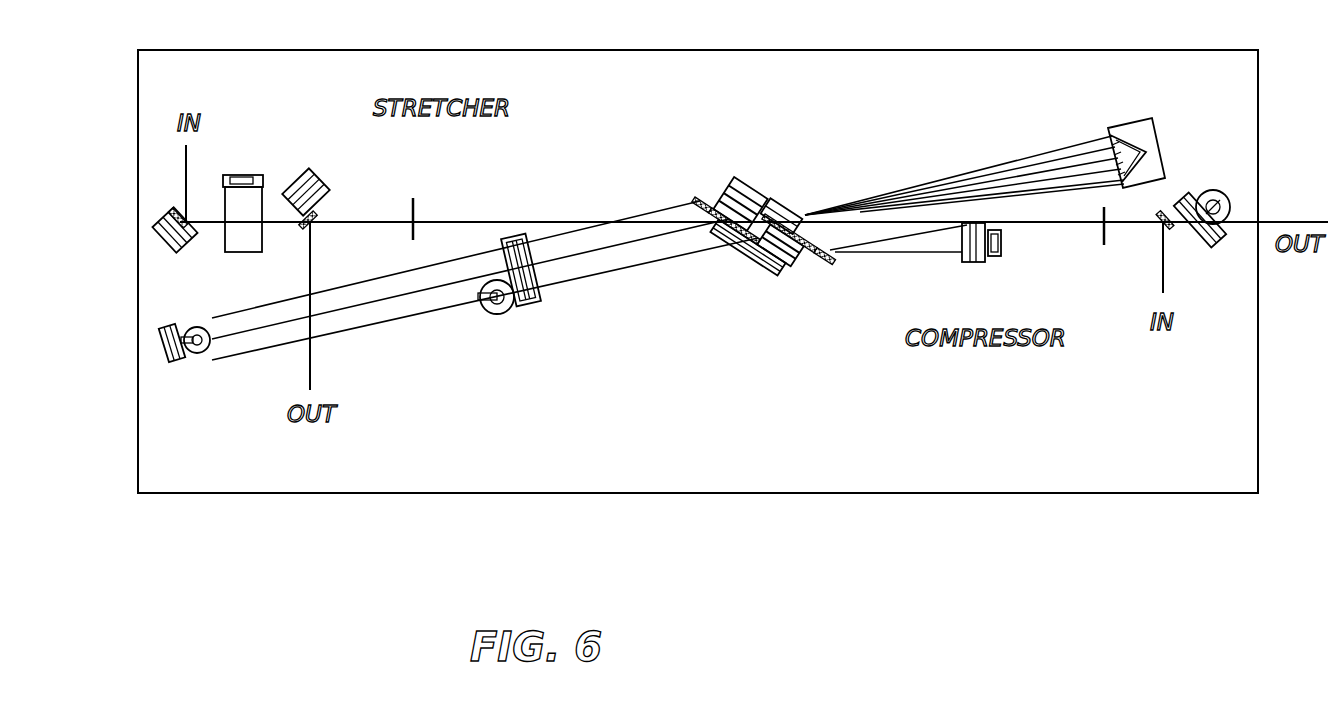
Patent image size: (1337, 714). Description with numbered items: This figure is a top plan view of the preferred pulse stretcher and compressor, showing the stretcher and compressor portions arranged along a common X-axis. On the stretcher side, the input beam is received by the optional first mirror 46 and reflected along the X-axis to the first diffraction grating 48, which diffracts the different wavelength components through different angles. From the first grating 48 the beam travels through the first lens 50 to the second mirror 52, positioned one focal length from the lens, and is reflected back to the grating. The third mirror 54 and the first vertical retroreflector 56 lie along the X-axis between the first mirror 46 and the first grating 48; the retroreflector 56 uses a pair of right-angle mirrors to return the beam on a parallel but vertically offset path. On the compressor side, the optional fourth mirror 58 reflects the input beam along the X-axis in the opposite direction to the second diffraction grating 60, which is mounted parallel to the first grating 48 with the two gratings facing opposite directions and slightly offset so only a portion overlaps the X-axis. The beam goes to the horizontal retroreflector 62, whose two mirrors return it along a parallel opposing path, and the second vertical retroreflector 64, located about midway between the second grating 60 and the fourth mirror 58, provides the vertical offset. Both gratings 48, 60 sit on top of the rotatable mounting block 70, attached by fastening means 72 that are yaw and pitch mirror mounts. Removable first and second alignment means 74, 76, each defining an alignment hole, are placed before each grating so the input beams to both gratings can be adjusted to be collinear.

The first mirror 46 is at (160, 214).
The first diffraction grating 48 is at (697, 198).
The first lens 50 is at (540, 303).
The second mirror 52 is at (175, 365).
The third mirror 54 is at (314, 172).
The first vertical retroreflector 56 is at (248, 175).
The fourth mirror 58 is at (1170, 228).
The second diffraction grating 60 is at (835, 262).
The horizontal retroreflector 62 is at (1150, 130).
The second vertical retroreflector 64 is at (1000, 252).
The rotatable mounting block 70 is at (780, 200).
The fastening means 72 is at (732, 180).
The first alignment means 74 is at (415, 210).
The second alignment means 76 is at (1103, 230).